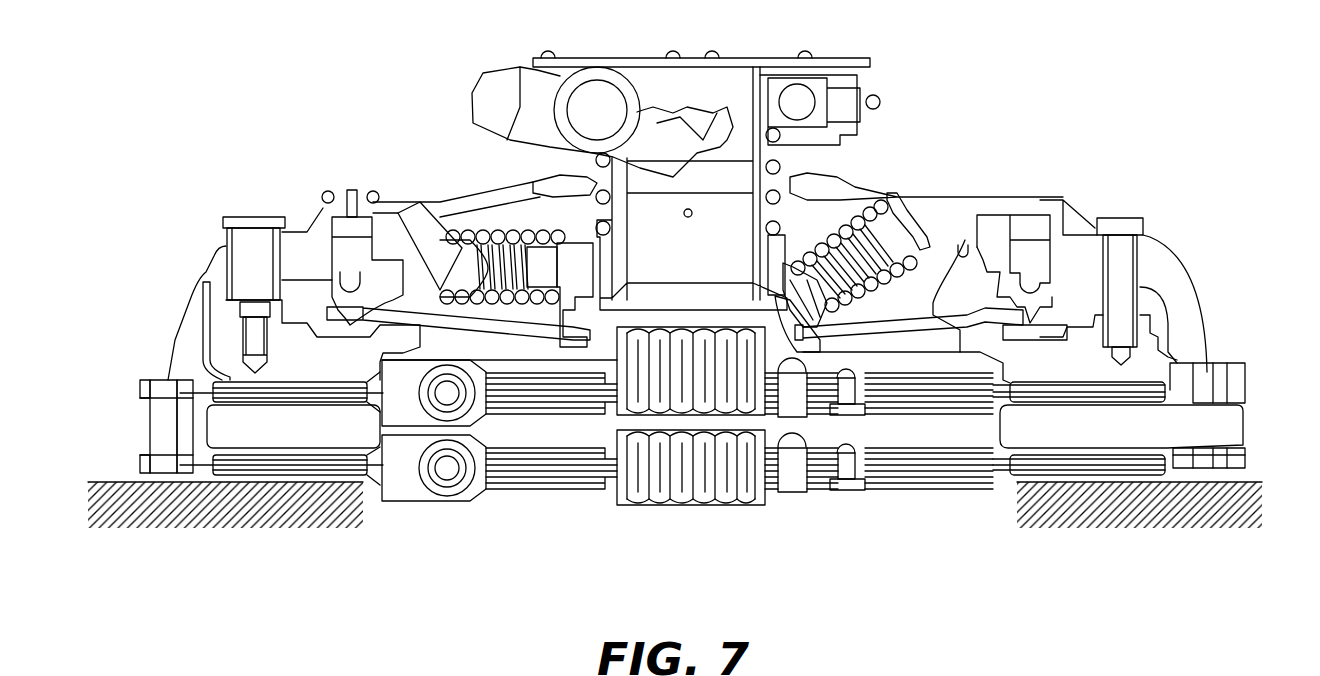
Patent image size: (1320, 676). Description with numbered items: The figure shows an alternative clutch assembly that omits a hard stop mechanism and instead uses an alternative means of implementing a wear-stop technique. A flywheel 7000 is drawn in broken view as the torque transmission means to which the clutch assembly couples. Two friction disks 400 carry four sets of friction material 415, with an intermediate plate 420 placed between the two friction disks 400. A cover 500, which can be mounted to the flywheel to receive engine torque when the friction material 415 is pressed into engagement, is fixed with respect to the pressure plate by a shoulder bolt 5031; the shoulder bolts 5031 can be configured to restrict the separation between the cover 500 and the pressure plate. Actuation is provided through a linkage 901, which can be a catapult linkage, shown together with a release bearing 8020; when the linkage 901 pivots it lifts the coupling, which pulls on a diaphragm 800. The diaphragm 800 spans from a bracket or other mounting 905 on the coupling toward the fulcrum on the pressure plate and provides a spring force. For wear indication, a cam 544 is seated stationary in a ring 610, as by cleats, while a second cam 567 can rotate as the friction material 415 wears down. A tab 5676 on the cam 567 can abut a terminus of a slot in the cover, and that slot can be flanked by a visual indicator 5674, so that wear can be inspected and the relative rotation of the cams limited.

The friction disk 400 is at (1175, 393).
The friction material 415 is at (140, 394).
The intermediate plate 420 is at (1240, 432).
The cover 500 is at (1185, 290).
The cam 544 is at (374, 247).
The cam 567 is at (342, 228).
The visual indicator 5674 is at (374, 190).
The tab 5676 is at (348, 190).
The shoulder bolt 5031 is at (237, 220).
The ring 610 is at (1000, 280).
The diaphragm 800 is at (965, 240).
The release bearing 8020 is at (850, 62).
The linkage 901 is at (488, 92).
The mounting 905 is at (785, 352).
The flywheel 7000 is at (140, 522).